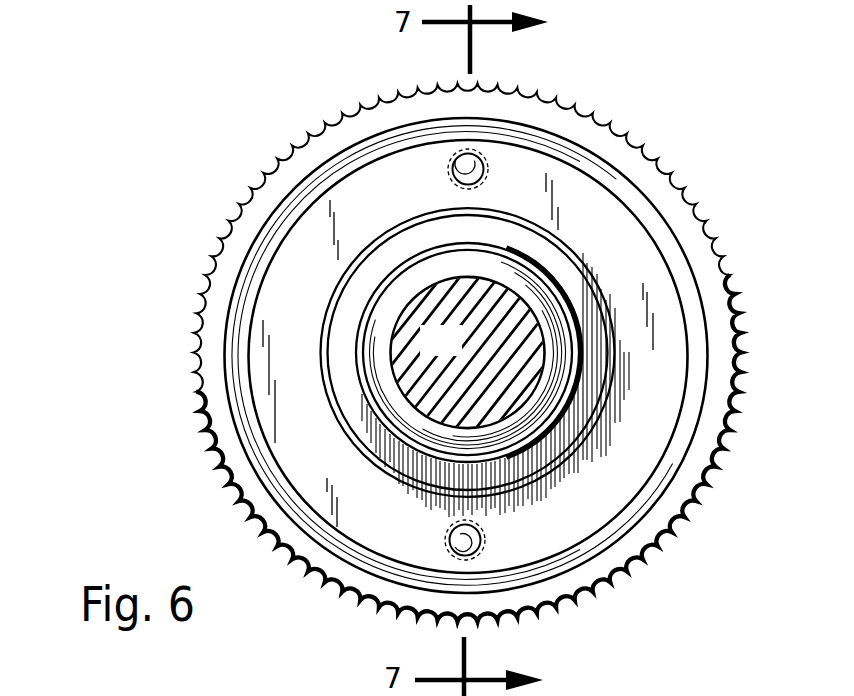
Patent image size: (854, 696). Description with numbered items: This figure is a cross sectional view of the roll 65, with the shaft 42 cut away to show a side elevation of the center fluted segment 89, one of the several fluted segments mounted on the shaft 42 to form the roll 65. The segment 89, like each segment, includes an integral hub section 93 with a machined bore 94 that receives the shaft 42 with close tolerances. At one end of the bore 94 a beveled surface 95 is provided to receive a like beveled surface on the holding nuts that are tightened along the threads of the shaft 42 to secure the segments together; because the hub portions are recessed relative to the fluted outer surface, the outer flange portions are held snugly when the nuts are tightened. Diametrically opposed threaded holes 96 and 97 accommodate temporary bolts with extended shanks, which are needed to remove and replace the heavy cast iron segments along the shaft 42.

The shaft 42 is at (459, 353).
The roll 65 is at (178, 256).
The fluted segment 89 is at (320, 120).
The integral hub section 93 is at (538, 248).
The machined bore 94 is at (532, 312).
The beveled surface 95 is at (410, 422).
The threaded hole 96 is at (490, 165).
The threaded hole 97 is at (482, 547).